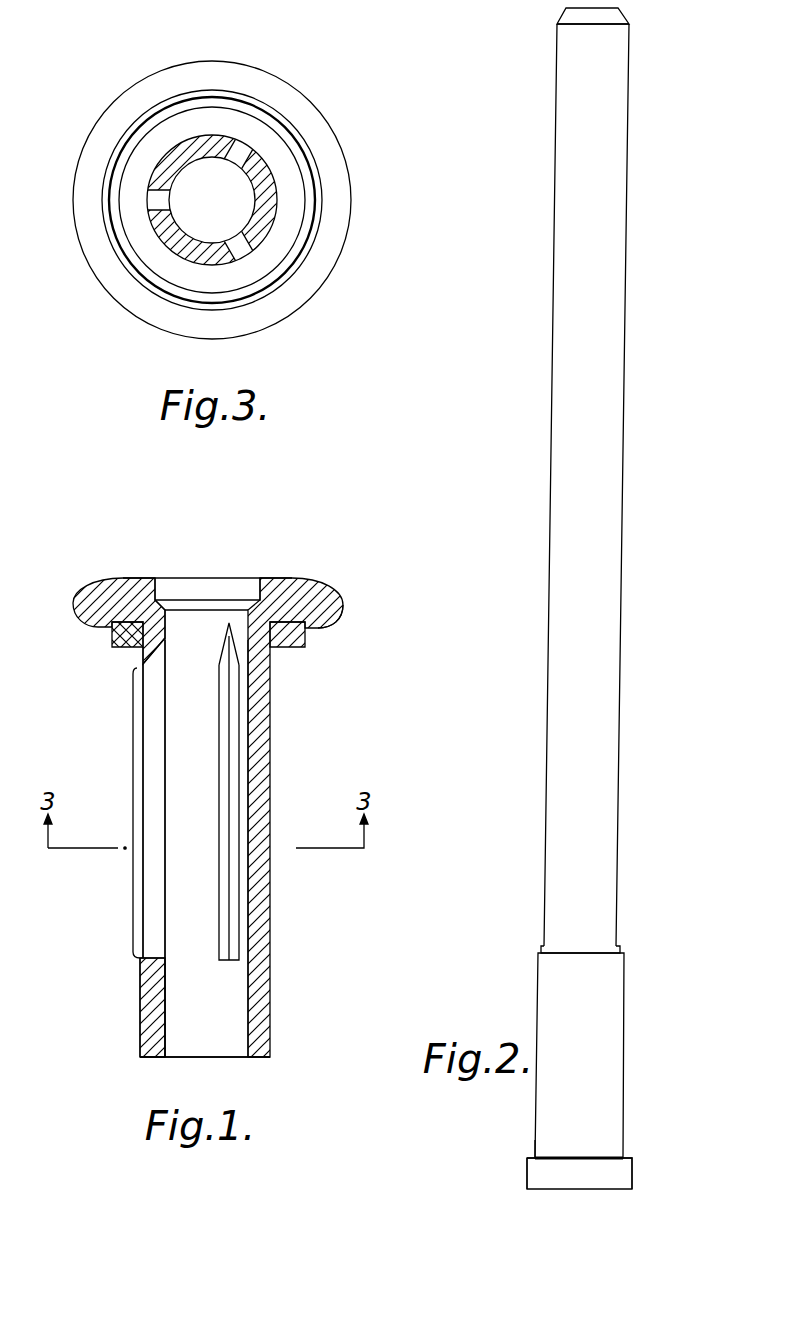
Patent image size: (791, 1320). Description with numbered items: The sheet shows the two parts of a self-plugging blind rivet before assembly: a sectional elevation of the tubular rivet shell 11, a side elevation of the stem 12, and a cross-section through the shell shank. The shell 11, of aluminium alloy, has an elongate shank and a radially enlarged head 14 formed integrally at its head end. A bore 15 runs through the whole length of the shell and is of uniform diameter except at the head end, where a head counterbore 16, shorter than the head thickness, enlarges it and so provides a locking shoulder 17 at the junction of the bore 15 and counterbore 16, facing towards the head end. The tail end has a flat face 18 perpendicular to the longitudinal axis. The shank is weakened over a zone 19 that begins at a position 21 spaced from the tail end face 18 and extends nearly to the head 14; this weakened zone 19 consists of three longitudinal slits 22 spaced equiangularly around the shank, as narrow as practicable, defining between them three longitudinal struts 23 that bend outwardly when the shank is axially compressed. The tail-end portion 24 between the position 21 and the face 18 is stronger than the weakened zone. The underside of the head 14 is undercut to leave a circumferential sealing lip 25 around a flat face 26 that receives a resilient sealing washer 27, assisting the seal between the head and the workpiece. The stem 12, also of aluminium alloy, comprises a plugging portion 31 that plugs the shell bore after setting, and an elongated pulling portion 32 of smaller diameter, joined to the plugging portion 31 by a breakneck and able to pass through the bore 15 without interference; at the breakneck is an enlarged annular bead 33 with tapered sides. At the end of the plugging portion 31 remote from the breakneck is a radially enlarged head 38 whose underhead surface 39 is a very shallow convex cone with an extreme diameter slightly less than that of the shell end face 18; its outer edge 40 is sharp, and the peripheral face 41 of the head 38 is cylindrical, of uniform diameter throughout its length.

In FIG. 1, the tubular rivet shell 11 is at (270, 928).
In FIG. 2, the stem 12 is at (617, 820).
In FIG. 1, the head 14 is at (301, 592).
In FIG. 3, the head 14 is at (295, 87).
In FIG. 1, the bore 15 is at (182, 998).
In FIG. 3, the bore 15 is at (190, 217).
In FIG. 1, the head counterbore 16 is at (244, 595).
In FIG. 1, the locking shoulder 17 is at (163, 604).
In FIG. 1, the tail end face 18 is at (153, 1058).
In FIG. 1, the weakened zone 19 is at (133, 799).
In FIG. 1, the end of weakened zone 21 is at (140, 958).
In FIG. 1, the longitudinal slits 22 is at (225, 768).
In FIG. 3, the longitudinal slits 22 is at (240, 155).
In FIG. 1, the longitudinal struts 23 is at (180, 732).
In FIG. 3, the longitudinal struts 23 is at (175, 165).
In FIG. 1, the tail-end portion 24 is at (152, 1030).
In FIG. 1, the circumferential sealing lip 25 is at (324, 630).
In FIG. 3, the circumferential sealing lip 25 is at (307, 127).
In FIG. 1, the flat face 26 is at (305, 641).
In FIG. 3, the flat face 26 is at (303, 153).
In FIG. 1, the resilient sealing washer 27 is at (113, 636).
In FIG. 3, the resilient sealing washer 27 is at (288, 180).
In FIG. 2, the plugging portion 31 is at (609, 1046).
In FIG. 2, the pulling portion 32 is at (609, 493).
In FIG. 2, the enlarged annular bead 33 is at (624, 953).
In FIG. 2, the radially enlarged head 38 is at (632, 1183).
In FIG. 2, the underhead surface 39 is at (534, 1156).
In FIG. 2, the outer edge 40 is at (545, 1160).
In FIG. 2, the peripheral face 41 is at (624, 1168).